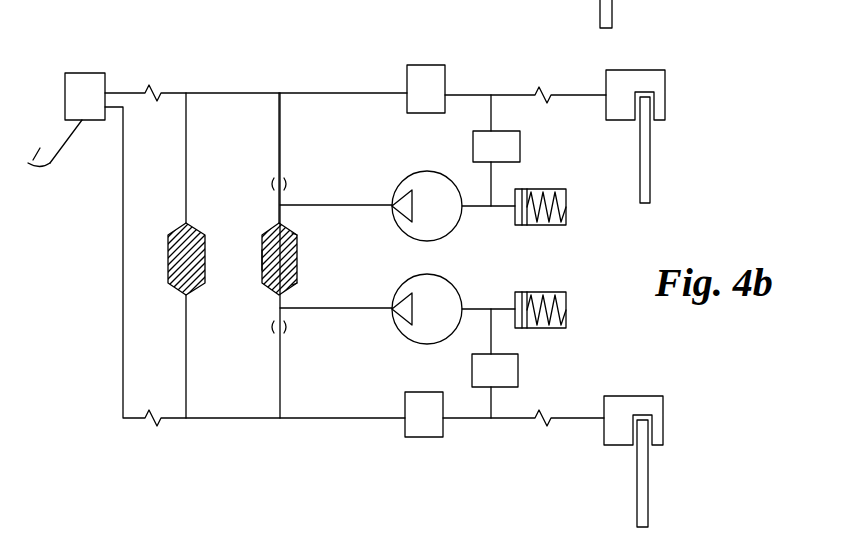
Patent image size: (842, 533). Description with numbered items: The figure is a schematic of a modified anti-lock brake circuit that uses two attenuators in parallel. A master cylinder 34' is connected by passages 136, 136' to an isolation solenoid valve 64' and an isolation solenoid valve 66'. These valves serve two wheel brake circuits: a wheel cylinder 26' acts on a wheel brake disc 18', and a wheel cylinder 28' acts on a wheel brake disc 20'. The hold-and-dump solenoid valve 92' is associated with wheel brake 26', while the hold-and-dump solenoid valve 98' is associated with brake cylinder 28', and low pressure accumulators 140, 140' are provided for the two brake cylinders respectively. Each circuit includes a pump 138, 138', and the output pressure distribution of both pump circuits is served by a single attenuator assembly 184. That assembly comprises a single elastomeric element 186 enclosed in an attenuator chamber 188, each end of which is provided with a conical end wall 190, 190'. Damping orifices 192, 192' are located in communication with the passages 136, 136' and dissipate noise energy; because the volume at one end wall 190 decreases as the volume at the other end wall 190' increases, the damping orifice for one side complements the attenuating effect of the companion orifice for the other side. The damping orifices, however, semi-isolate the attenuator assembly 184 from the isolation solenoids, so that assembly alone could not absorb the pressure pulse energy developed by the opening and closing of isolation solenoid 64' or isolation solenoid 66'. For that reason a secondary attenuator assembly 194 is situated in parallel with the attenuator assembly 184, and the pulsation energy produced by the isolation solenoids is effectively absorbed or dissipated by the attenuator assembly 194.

The master cylinder 34' is at (59, 94).
The passage 136 is at (355, 225).
The passage 136' is at (354, 294).
The isolation solenoid valve 64' is at (461, 71).
The isolation solenoid valve 66' is at (438, 438).
The hold-and-dump solenoid valve 92' is at (531, 150).
The hold-and-dump solenoid valve 98' is at (528, 363).
The wheel cylinder 26' is at (665, 72).
The wheel cylinder 28' is at (652, 396).
The wheel brake disc 18' is at (665, 101).
The wheel brake disc 20' is at (678, 473).
The pump 138 is at (446, 187).
The pump 138' is at (434, 328).
The low pressure accumulator 140 is at (564, 224).
The low pressure accumulator 140' is at (567, 300).
The attenuator assembly 184 is at (262, 263).
The elastomeric element 186 is at (266, 233).
The attenuator chamber 188 is at (297, 255).
The conical end wall 190 is at (329, 225).
The conical end wall 190' is at (332, 283).
The damping orifice 192 is at (312, 165).
The damping orifice 192' is at (332, 345).
The attenuator assembly 194 is at (170, 248).